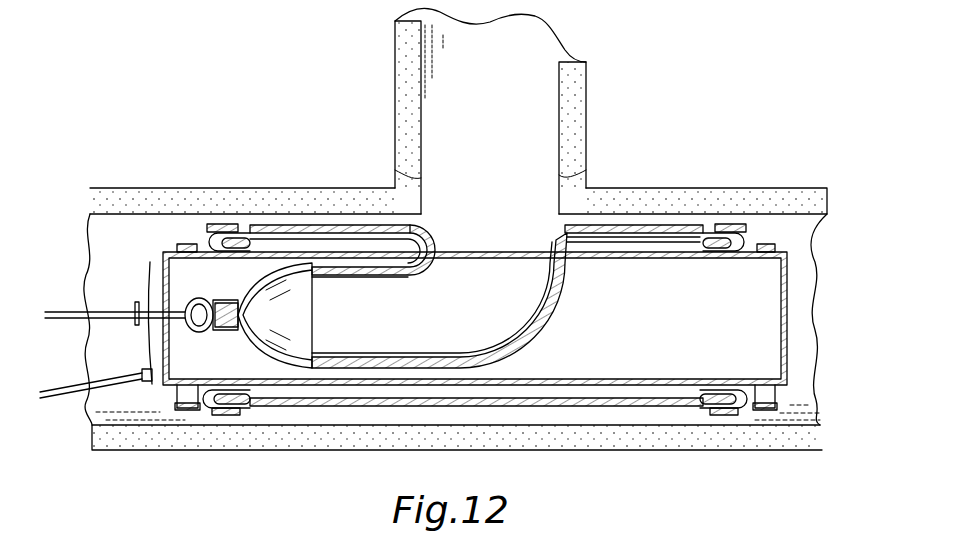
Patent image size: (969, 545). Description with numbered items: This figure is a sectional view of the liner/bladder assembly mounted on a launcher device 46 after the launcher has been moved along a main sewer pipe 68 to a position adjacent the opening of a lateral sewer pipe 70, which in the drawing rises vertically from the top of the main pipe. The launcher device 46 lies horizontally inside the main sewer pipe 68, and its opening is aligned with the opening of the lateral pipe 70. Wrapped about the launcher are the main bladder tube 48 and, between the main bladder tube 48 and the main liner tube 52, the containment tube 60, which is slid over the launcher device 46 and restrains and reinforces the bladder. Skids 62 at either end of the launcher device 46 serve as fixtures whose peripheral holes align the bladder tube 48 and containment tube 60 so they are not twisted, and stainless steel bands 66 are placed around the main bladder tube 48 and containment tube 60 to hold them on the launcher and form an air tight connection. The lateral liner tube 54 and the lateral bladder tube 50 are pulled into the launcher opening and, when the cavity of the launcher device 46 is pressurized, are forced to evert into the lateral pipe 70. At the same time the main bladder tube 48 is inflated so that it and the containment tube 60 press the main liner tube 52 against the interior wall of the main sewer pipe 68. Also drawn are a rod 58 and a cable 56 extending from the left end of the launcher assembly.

The lateral sewer pipe 70 is at (586, 78).
The main sewer pipe 68 is at (641, 190).
The containment tube 60 is at (702, 235).
The main liner tube 52 is at (291, 227).
The main bladder tube 48 is at (380, 256).
The lateral bladder tube 50 is at (428, 232).
The launcher device 46 is at (567, 231).
The lateral liner tube 54 is at (563, 280).
The stainless steel band 66 is at (208, 232).
The skid 62 is at (178, 249).
The rod 58 is at (97, 312).
The cable 56 is at (97, 386).